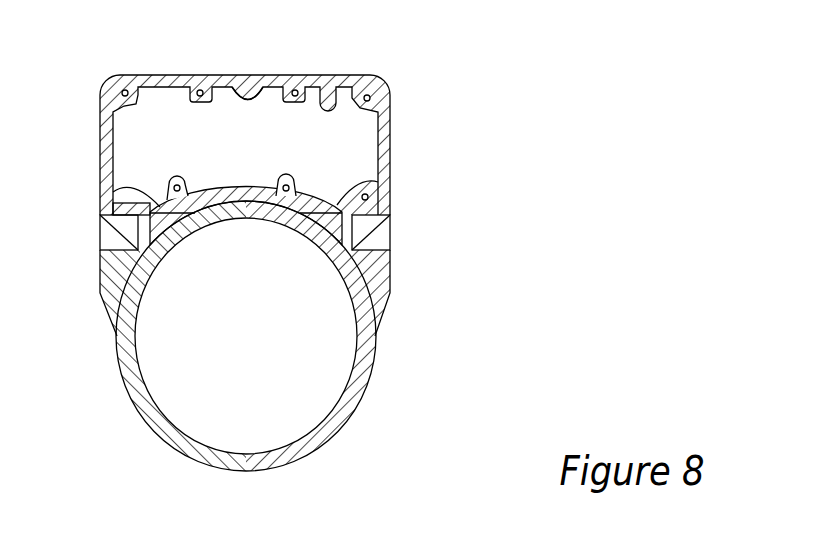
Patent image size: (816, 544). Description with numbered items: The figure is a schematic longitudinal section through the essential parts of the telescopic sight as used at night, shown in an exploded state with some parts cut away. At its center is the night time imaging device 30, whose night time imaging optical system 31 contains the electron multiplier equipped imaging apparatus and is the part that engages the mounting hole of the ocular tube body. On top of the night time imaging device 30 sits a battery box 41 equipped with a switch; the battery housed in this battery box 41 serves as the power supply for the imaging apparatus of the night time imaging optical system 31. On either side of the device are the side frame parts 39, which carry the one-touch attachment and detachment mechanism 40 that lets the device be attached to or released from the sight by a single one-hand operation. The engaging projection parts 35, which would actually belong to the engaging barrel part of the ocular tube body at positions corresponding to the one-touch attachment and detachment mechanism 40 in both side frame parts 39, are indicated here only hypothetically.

The night time imaging device 30 is at (392, 119).
The night time imaging optical system 31 is at (345, 421).
The engaging projection parts 35 is at (100, 190).
The side frame parts 39 is at (100, 293).
The one-touch attachment and detachment mechanism 40 is at (105, 236).
The battery box 41 is at (232, 115).